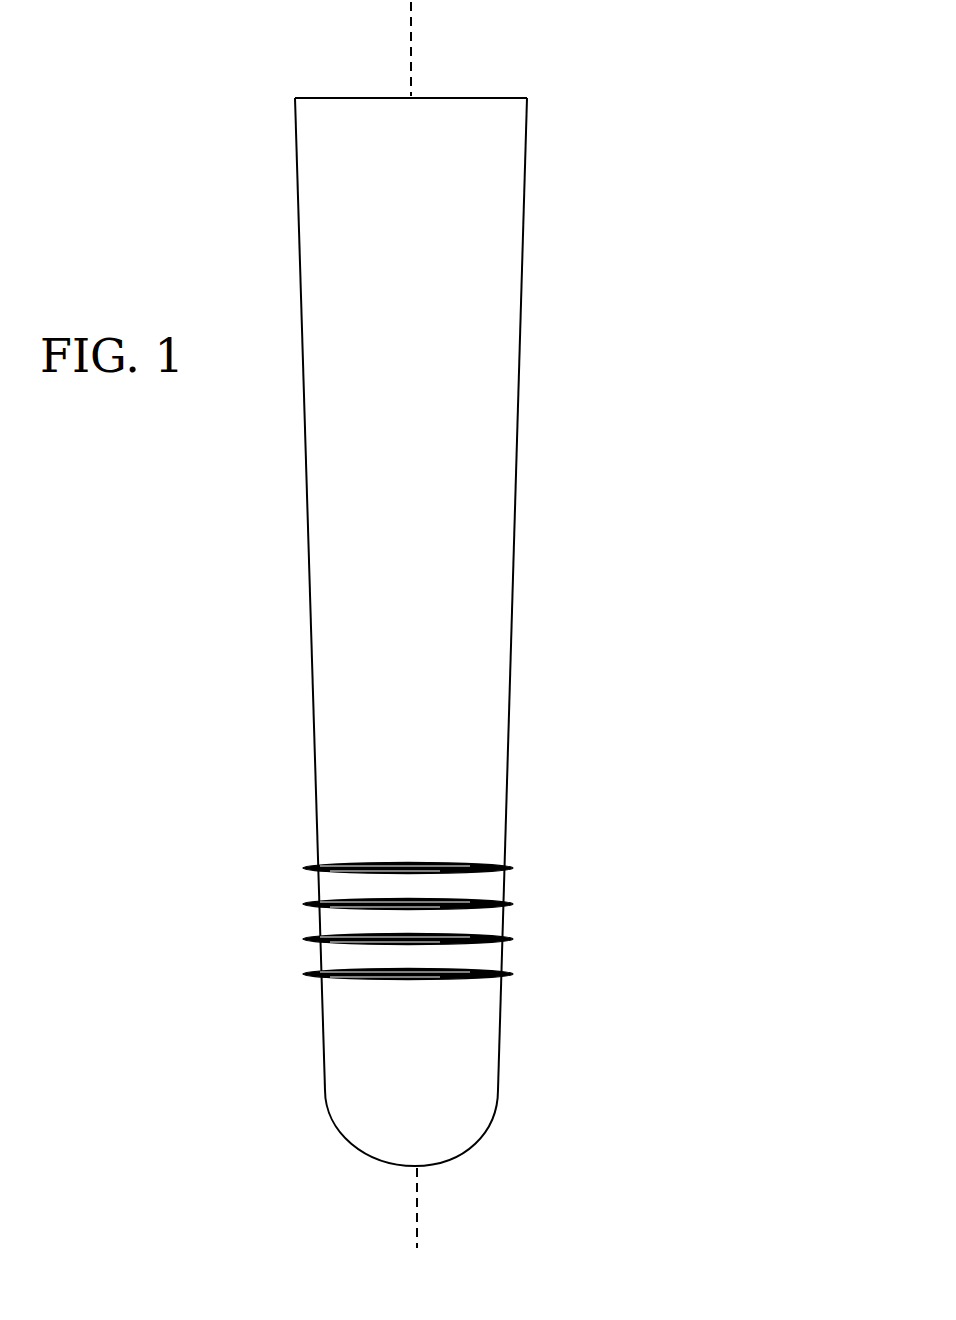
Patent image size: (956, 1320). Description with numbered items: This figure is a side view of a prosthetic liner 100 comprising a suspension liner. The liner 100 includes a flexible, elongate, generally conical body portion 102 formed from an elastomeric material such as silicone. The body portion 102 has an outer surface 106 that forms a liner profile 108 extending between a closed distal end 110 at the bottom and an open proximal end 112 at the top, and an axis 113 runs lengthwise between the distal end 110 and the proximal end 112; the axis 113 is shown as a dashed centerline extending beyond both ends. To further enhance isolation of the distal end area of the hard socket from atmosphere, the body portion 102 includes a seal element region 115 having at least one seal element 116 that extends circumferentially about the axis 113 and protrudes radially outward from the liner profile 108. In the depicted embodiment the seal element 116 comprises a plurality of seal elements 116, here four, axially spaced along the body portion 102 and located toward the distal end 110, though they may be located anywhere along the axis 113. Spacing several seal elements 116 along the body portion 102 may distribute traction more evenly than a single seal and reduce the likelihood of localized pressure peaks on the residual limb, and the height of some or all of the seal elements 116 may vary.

The prosthetic liner 100 is at (266, 176).
The body portion 102 is at (524, 345).
The outer surface 106 is at (498, 248).
The liner profile 108 is at (512, 594).
The closed distal end 110 is at (338, 1132).
The open proximal end 112 is at (495, 98).
The axis 113 is at (408, 41).
The seal element region 115 is at (276, 929).
The seal element 116 is at (513, 868).